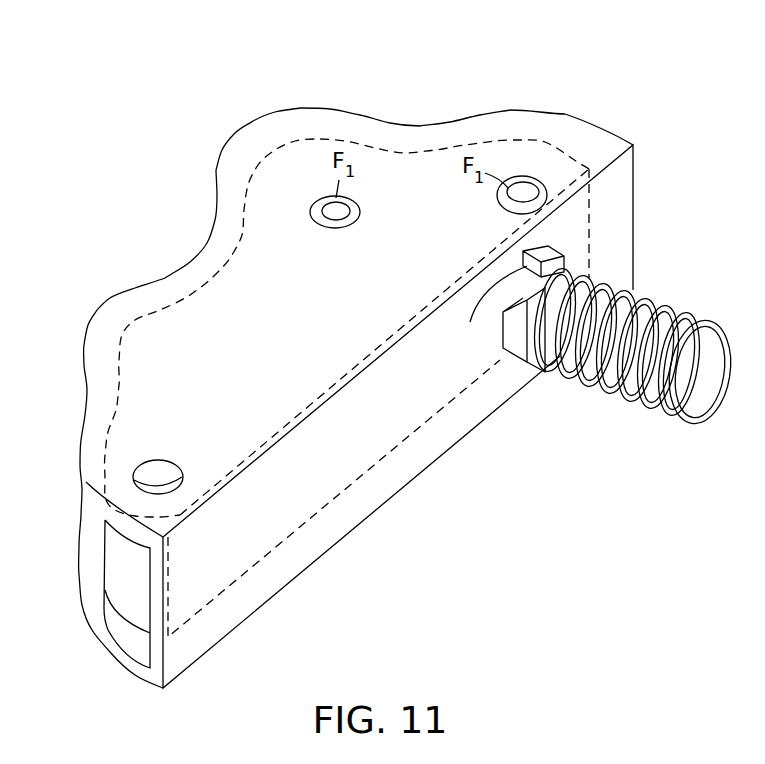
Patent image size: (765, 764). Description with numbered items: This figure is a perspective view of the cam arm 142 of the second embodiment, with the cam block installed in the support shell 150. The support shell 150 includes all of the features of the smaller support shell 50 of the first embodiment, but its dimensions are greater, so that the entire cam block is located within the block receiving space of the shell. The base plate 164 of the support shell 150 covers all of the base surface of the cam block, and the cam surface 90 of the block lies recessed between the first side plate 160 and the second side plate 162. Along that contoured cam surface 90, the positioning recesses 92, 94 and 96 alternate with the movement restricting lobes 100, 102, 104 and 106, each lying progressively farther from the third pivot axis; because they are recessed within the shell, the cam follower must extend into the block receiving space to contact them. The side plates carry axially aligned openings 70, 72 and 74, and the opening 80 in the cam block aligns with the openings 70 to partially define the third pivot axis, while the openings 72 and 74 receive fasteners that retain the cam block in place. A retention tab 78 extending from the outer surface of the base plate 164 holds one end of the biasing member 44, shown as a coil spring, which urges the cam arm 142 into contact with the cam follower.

The cam arm 142 is at (469, 88).
The support shell 150 is at (577, 140).
The base plate 164 is at (367, 495).
The movement restricting lobe 106 is at (518, 147).
The positioning recess 96 is at (407, 152).
The movement restricting lobe 104 is at (310, 145).
The support shell 50 is at (273, 177).
The positioning recess 94 is at (220, 274).
The first side plate 160 is at (118, 306).
The movement restricting lobe 102 is at (123, 333).
The positioning recess 92 is at (103, 447).
The second side plate 162 is at (107, 628).
The movement restricting lobe 100 is at (103, 546).
The cam surface 90 is at (123, 579).
The opening 70 is at (167, 469).
The opening 80 is at (158, 488).
The opening 72 is at (340, 227).
The opening 74 is at (500, 194).
The retention tab 78 is at (513, 338).
The biasing member 44 is at (680, 307).